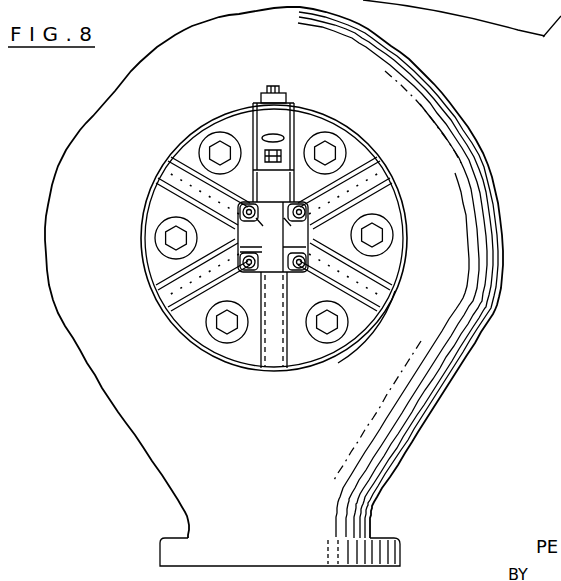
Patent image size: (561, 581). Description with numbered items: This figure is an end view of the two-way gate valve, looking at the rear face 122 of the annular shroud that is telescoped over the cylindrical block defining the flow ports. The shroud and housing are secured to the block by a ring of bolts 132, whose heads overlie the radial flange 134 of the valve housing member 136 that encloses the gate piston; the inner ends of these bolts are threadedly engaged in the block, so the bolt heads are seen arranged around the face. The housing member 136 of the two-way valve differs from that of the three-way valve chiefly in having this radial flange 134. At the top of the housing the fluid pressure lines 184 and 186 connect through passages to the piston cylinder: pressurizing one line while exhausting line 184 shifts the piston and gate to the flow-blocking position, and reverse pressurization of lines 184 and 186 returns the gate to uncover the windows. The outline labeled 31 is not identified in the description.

The housing 31 is at (472, 170).
The rear face 122 is at (348, 70).
The bolts 132 is at (373, 235).
The radial flange 134 is at (355, 325).
The valve housing member 136 is at (437, 140).
The fluid pressure line 184 is at (265, 88).
The fluid pressure line 186 is at (265, 153).